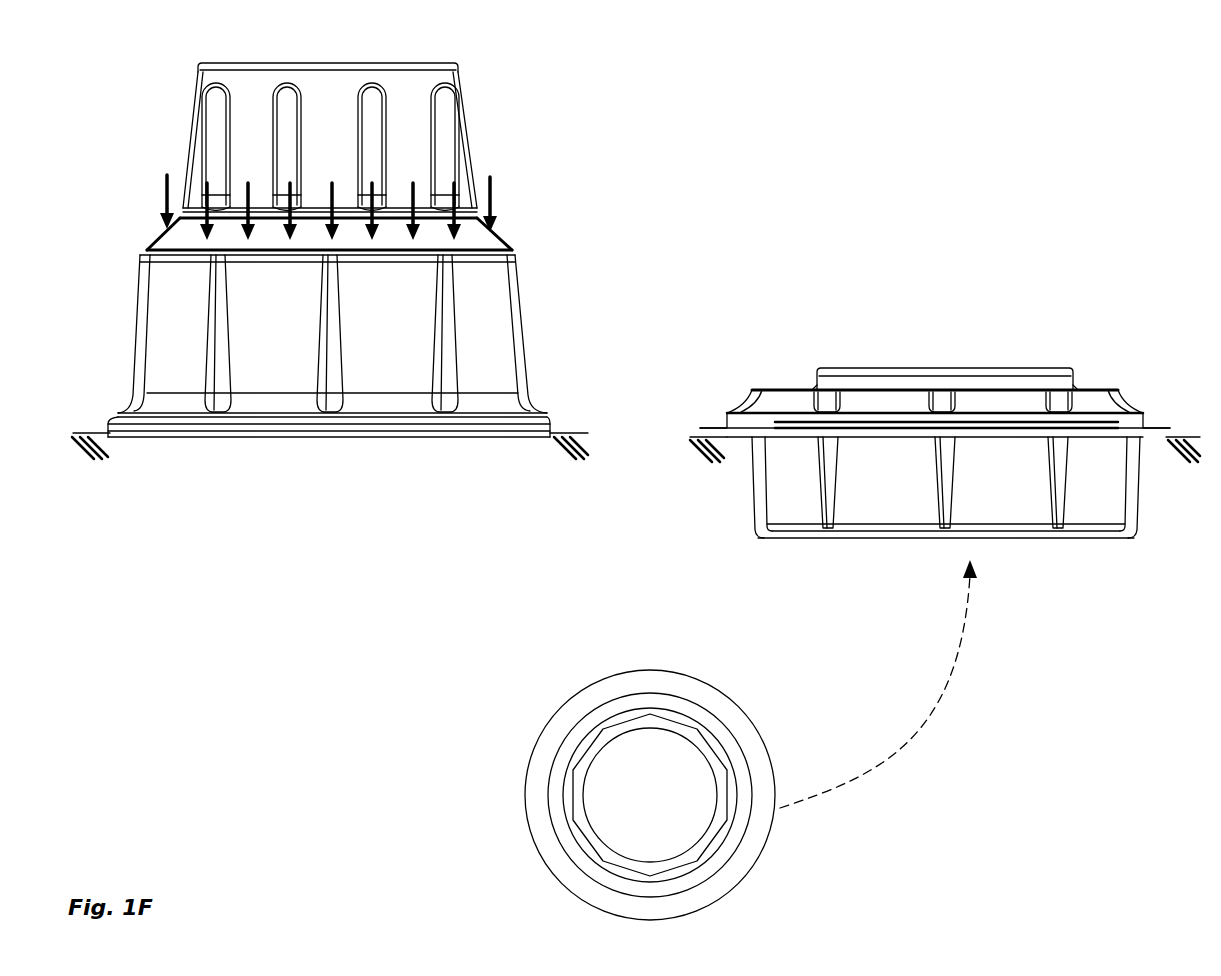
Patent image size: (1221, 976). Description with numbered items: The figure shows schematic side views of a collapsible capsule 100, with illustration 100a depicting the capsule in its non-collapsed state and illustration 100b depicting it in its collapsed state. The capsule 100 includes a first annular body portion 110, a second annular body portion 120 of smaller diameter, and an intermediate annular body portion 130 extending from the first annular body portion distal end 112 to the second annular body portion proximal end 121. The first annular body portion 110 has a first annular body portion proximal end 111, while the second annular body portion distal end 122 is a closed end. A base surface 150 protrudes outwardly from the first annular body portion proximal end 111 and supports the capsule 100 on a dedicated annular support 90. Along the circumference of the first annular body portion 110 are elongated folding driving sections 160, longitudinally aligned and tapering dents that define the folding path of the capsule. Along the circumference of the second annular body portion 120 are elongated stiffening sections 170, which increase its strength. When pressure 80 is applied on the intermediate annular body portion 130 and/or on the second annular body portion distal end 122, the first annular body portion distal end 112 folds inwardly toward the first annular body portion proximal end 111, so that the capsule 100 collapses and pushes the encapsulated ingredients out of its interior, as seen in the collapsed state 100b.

The capsule 100 is at (72, 59).
The illustration of capsule in non-collapsed state 100a is at (598, 104).
The illustration of capsule in collapsed state 100b is at (789, 316).
The pressure 80 is at (164, 176).
The dedicated annular support 90 is at (686, 456).
The first annular body portion 110 is at (527, 350).
The first annular body portion proximal end 111 is at (541, 415).
The first annular body portion distal end 112 is at (516, 258).
The second annular body portion 120 is at (470, 146).
The second annular body portion proximal end 121 is at (479, 214).
The second annular body portion distal end 122 is at (459, 70).
The intermediate annular body portion 130 is at (163, 236).
The base surface 150 is at (108, 432).
The elongated folding driving sections 160 is at (318, 340).
The elongated stiffening sections 170 is at (286, 130).